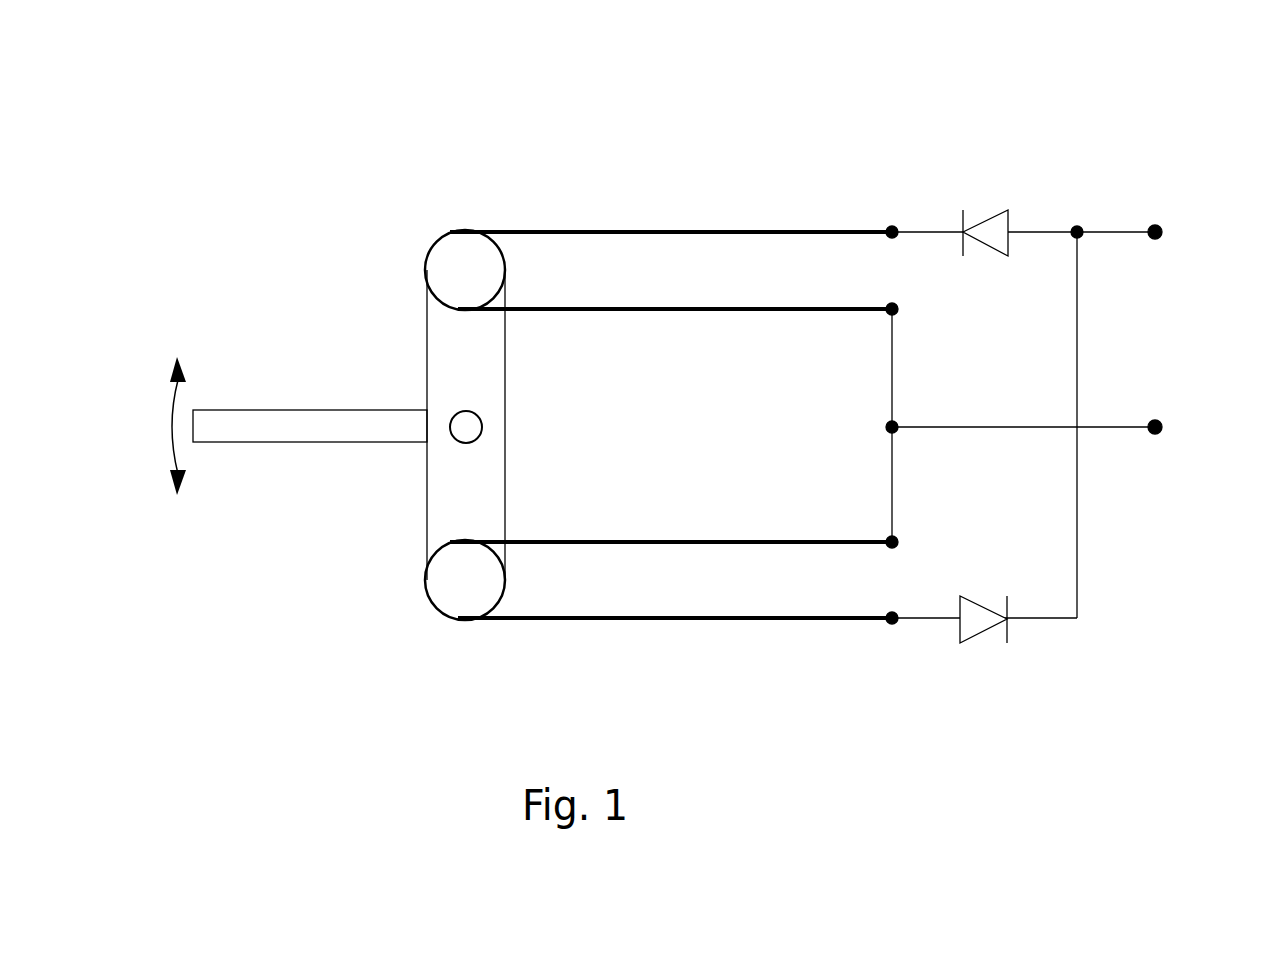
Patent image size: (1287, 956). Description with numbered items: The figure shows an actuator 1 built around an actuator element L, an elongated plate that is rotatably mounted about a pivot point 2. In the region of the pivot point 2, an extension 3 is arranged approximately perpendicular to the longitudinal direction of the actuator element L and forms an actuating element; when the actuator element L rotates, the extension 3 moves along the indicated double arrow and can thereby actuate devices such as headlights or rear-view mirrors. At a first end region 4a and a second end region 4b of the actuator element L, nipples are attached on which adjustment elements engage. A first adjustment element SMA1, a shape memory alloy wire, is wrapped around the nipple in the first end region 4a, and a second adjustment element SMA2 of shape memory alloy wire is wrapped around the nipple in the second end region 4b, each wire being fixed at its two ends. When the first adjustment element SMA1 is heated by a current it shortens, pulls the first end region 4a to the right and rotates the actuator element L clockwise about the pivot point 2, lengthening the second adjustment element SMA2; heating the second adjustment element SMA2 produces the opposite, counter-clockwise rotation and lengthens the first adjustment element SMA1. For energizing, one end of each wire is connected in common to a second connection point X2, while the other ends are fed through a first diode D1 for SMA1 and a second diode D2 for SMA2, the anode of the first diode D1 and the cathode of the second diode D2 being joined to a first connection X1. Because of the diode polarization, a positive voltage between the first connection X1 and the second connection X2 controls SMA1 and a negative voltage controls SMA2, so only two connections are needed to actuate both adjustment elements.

The actuator 1 is at (400, 154).
The pivot point 2 is at (460, 420).
The extension 3 is at (327, 418).
The first end region 4a is at (465, 262).
The second end region 4b is at (465, 578).
The actuator element L is at (464, 371).
The first adjustment element SMA1 is at (671, 270).
The second adjustment element SMA2 is at (671, 580).
The first diode D1 is at (988, 264).
The second diode D2 is at (988, 591).
The first connection X1 is at (1193, 231).
The second connection point X2 is at (1193, 425).